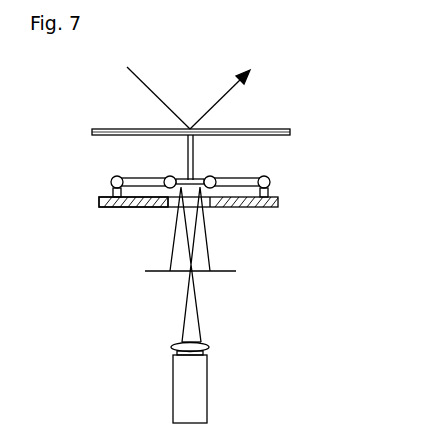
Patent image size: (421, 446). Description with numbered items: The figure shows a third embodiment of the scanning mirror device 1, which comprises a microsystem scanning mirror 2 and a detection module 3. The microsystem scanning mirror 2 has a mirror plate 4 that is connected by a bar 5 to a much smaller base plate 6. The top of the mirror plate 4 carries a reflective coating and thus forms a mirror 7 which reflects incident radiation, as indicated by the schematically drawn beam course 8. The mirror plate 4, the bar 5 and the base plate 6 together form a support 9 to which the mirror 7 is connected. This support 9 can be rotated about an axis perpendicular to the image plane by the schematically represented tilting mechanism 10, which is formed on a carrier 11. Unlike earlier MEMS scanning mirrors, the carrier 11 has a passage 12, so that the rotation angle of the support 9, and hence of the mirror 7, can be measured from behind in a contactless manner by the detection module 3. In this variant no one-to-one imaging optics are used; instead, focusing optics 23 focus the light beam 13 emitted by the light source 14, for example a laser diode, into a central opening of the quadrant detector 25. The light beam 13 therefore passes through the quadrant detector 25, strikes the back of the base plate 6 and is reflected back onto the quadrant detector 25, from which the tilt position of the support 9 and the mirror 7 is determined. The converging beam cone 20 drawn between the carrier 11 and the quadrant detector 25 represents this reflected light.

The scanning mirror device 1 is at (278, 97).
The microsystem scanning mirror 2 is at (80, 156).
The detection module 3 is at (263, 298).
The mirror plate 4 is at (290, 132).
The bar 5 is at (187, 165).
The base plate 6 is at (196, 180).
The mirror 7 is at (105, 129).
The beam course 8 is at (145, 86).
The support 9 is at (203, 156).
The tilting mechanism 10 is at (117, 177).
The carrier 11 is at (278, 202).
The passage 12 is at (167, 200).
The light beam 13 is at (183, 316).
The light source 14 is at (207, 383).
The beam cone 20 is at (209, 258).
The focusing optics 23 is at (205, 344).
The quadrant detector 25 is at (147, 271).